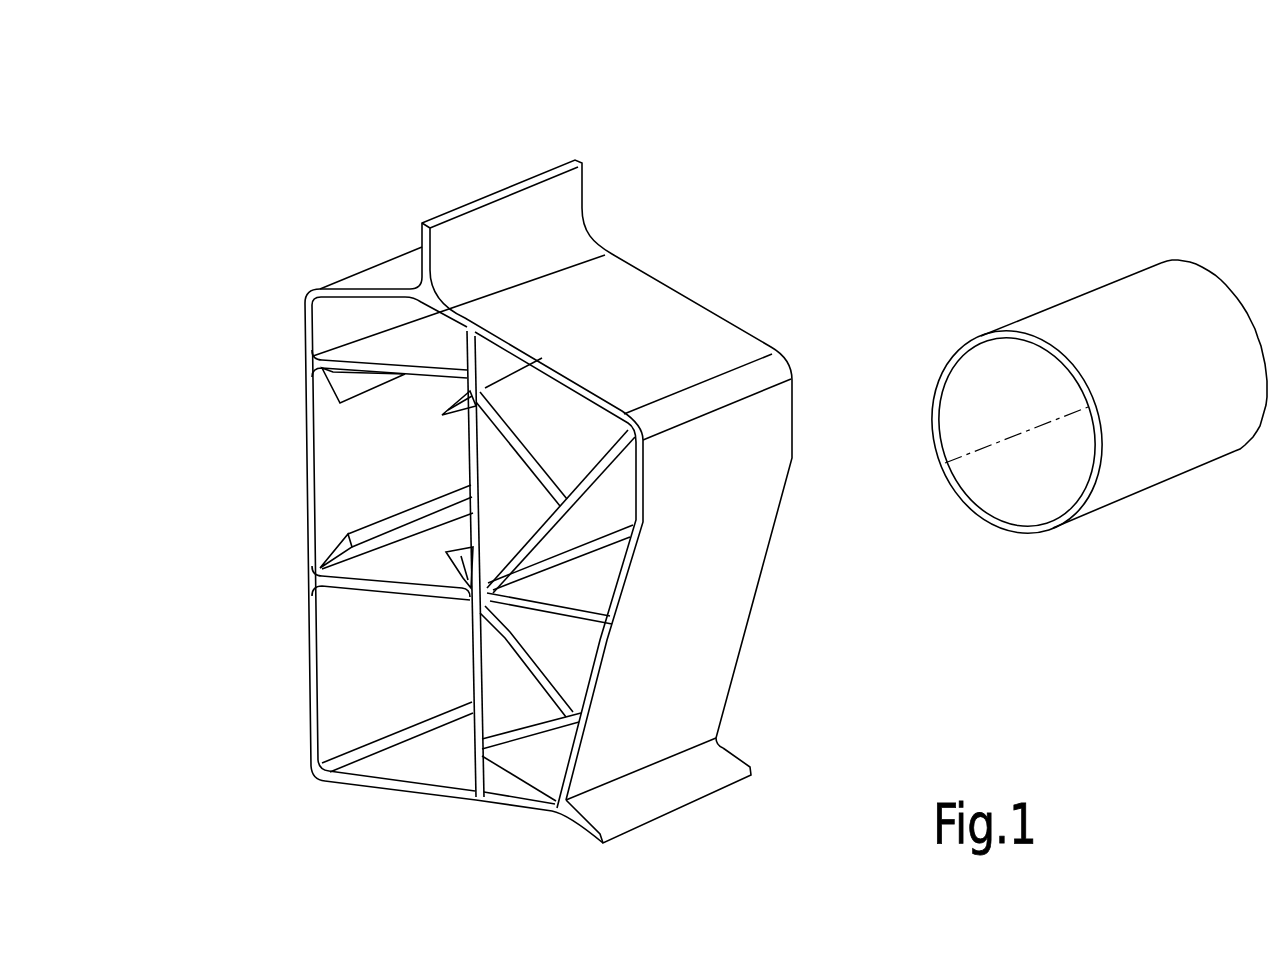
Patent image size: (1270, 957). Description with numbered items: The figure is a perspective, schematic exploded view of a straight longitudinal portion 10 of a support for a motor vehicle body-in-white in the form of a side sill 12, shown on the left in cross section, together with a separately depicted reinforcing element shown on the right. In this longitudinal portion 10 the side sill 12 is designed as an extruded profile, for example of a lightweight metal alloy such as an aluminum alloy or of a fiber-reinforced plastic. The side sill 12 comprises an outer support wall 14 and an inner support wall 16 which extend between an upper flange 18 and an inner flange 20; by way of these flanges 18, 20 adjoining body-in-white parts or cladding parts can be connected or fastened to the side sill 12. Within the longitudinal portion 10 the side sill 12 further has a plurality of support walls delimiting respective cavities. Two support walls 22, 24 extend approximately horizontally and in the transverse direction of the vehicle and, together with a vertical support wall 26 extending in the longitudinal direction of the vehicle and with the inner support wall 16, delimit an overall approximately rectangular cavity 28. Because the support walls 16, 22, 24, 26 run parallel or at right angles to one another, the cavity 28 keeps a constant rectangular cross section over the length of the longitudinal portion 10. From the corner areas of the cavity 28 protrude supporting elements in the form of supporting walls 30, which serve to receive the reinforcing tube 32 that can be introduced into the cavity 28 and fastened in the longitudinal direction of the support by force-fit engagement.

The longitudinal portion 10 is at (672, 140).
The side sill 12 is at (409, 133).
The outer support wall 14 is at (760, 569).
The inner support wall 16 is at (312, 493).
The upper flange 18 is at (560, 184).
The inner flange 20 is at (707, 777).
The support wall 22 is at (383, 352).
The support wall 24 is at (397, 572).
The vertical support wall 26 is at (510, 513).
The cavity 28 is at (333, 450).
The supporting walls 30 is at (482, 393).
The reinforcing tube 32 is at (1172, 216).